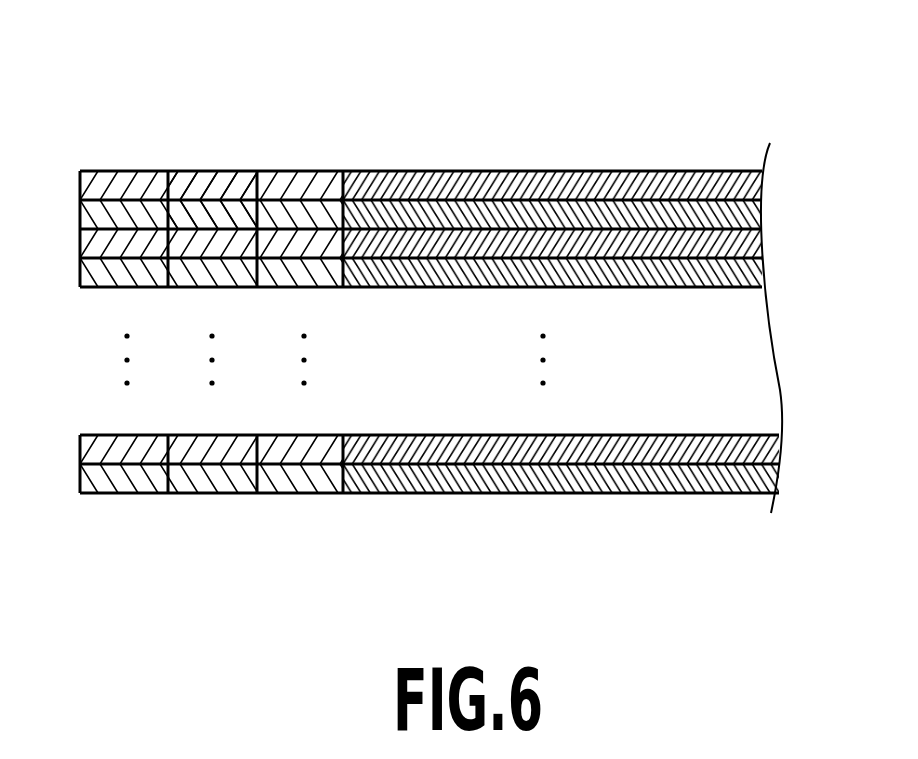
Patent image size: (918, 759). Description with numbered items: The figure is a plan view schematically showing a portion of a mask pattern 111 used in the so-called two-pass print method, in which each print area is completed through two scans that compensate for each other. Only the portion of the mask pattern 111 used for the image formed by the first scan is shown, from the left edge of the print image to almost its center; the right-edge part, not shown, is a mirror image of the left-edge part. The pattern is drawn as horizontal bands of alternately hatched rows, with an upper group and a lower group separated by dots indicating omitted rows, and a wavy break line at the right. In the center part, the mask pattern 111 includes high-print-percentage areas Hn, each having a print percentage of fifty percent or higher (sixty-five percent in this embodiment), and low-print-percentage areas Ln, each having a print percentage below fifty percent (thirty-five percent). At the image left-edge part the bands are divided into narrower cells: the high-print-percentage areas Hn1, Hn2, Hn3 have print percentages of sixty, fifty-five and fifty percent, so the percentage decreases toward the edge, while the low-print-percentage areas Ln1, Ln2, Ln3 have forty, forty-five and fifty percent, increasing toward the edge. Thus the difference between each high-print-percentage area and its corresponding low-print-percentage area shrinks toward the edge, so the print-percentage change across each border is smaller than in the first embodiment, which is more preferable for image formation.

The mask pattern 111 is at (717, 115).
The high-print-percentage area Hn3 is at (110, 183).
The low-print-percentage area Ln3 is at (143, 217).
The high-print-percentage area Hn2 is at (192, 183).
The low-print-percentage area Ln2 is at (230, 217).
The high-print-percentage area Hn1 is at (287, 183).
The low-print-percentage area Ln1 is at (322, 217).
The high-print-percentage area Hn is at (490, 188).
The low-print-percentage area Ln is at (602, 215).